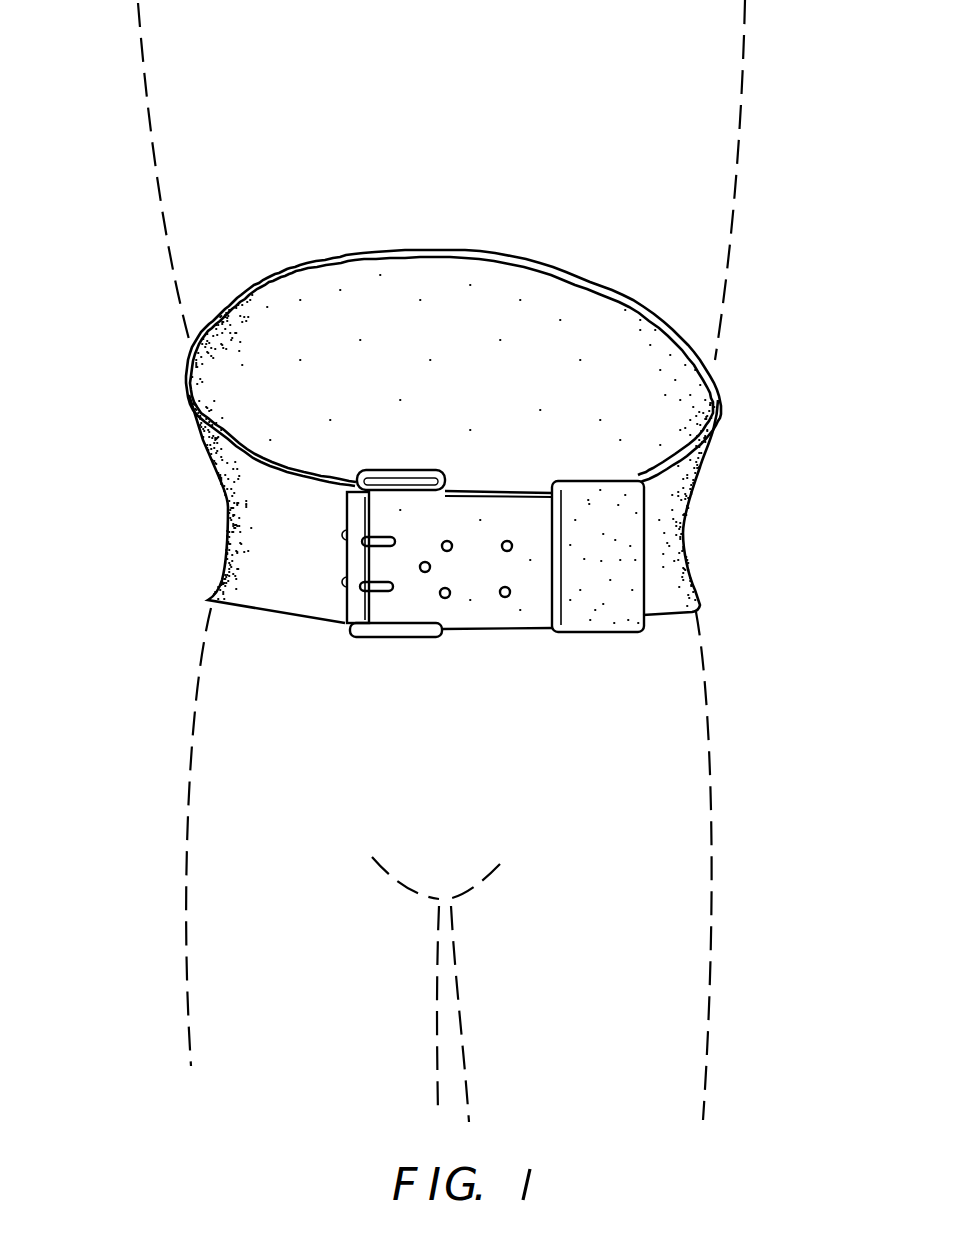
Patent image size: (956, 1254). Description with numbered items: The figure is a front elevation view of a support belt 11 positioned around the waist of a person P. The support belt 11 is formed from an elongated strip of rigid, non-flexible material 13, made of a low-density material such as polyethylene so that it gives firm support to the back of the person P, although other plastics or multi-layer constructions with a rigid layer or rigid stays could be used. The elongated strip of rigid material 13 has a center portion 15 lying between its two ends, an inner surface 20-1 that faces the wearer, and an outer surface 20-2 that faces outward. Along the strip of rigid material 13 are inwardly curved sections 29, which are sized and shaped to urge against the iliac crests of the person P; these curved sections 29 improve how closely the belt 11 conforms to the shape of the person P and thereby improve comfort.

The support belt 11 is at (182, 537).
The elongated strip of rigid material 13 is at (630, 292).
The center portion 15 is at (443, 287).
The inner surface 20-1 is at (307, 300).
The outer surface 20-2 is at (237, 465).
The inwardly curved sections 29 is at (686, 527).
The person P is at (707, 300).